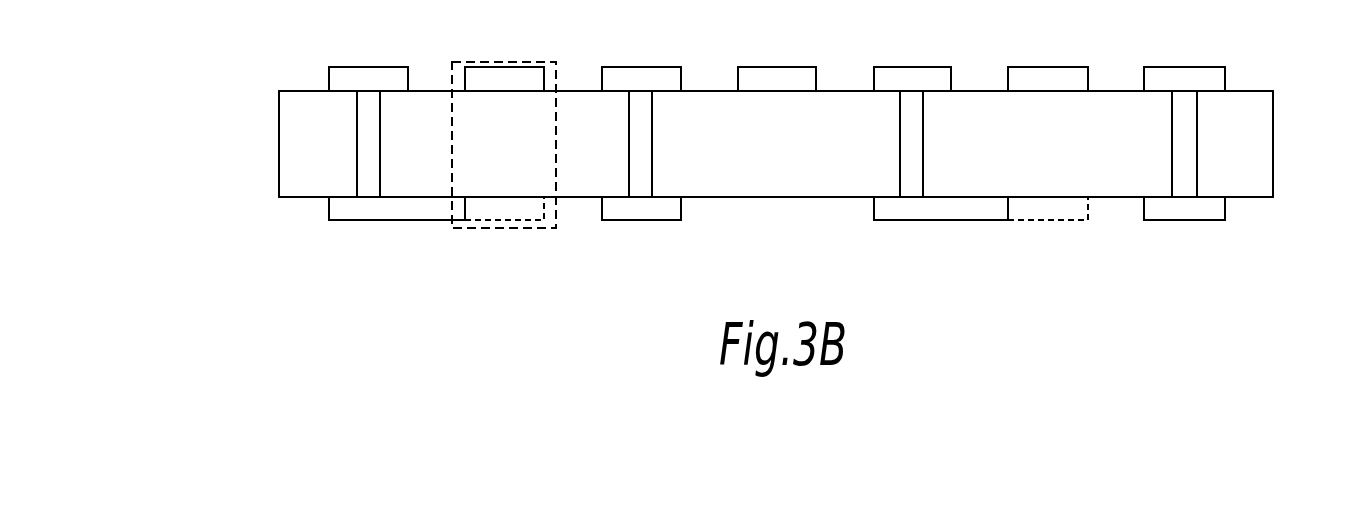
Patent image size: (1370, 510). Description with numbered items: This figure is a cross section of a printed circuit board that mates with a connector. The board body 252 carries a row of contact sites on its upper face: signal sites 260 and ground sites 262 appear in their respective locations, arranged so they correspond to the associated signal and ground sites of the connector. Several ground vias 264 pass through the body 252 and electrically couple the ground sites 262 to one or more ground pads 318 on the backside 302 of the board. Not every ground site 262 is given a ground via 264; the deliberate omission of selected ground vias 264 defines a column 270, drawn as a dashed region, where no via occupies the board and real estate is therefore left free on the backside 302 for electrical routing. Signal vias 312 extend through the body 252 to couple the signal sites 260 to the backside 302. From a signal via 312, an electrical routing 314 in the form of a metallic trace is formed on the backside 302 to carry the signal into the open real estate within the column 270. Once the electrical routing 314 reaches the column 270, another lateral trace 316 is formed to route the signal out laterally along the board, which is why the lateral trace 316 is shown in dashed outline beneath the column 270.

The body 252 is at (293, 116).
The signal sites 260 is at (368, 71).
The ground sites 262 is at (505, 71).
The ground vias 264 is at (635, 145).
The column 270 is at (452, 146).
The backside 302 is at (1270, 147).
The signal vias 312 is at (363, 145).
The electrical routing 314 is at (367, 222).
The lateral trace 316 is at (503, 222).
The ground pads 318 is at (639, 222).